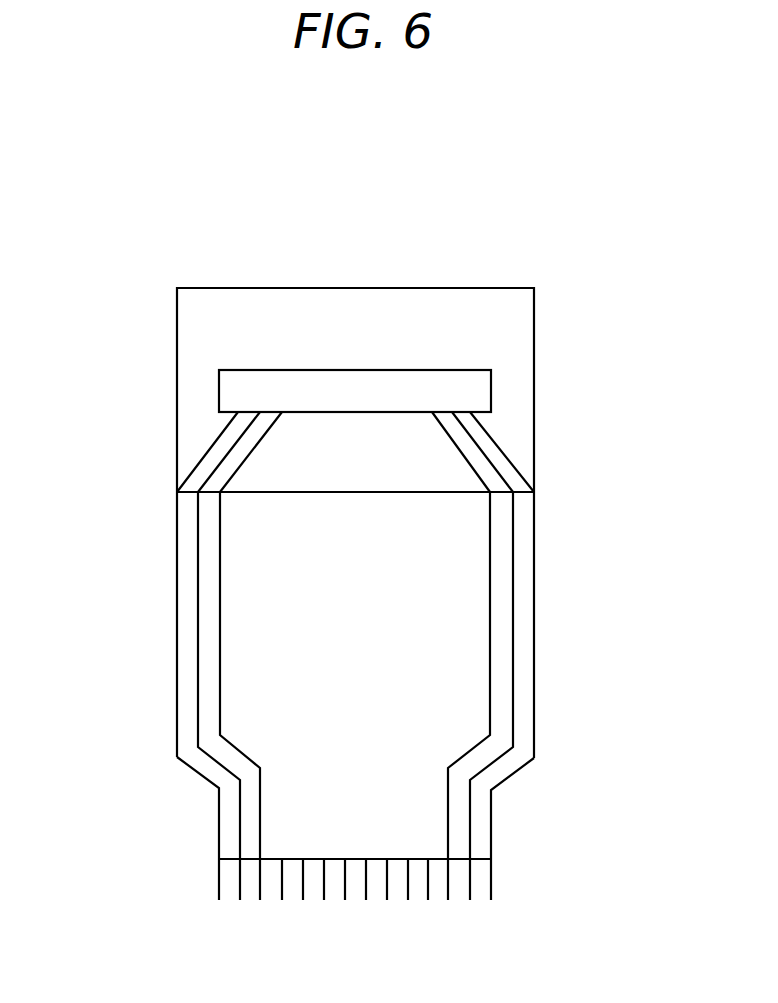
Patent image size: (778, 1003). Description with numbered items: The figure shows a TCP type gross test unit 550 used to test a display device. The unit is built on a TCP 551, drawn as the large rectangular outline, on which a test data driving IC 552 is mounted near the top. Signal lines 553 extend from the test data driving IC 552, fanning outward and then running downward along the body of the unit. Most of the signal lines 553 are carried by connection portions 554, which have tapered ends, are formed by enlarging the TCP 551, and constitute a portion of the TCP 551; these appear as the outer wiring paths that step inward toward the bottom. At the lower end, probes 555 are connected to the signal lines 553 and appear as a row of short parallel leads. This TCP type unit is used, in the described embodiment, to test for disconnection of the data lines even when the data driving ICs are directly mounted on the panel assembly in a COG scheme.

The gross test unit 550 is at (151, 406).
The TCP 551 is at (534, 311).
The test data driving IC 552 is at (491, 388).
The signal lines 553 is at (198, 578).
The connection portions 554 is at (534, 630).
The probes 555 is at (491, 883).